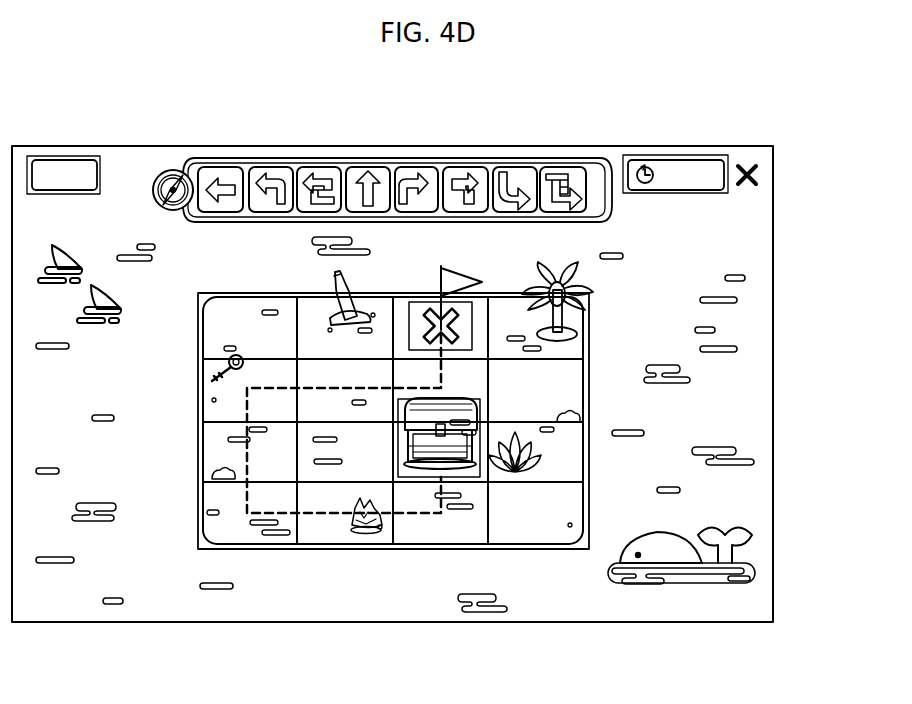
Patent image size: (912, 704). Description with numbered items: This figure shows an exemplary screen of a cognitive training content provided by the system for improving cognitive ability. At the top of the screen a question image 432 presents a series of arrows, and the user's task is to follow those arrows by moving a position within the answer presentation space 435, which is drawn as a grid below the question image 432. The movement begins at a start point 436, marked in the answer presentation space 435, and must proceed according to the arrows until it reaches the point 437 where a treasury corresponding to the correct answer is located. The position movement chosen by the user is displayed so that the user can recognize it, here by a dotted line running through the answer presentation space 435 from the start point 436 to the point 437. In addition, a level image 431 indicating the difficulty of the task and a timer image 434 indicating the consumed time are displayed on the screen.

The level image 431 is at (68, 156).
The question image 432 is at (275, 162).
The timer image 434 is at (656, 155).
The answer presentation space 435 is at (589, 455).
The start point 436 is at (475, 322).
The point where a treasury corresponding to a correct answer is located 437 is at (462, 473).